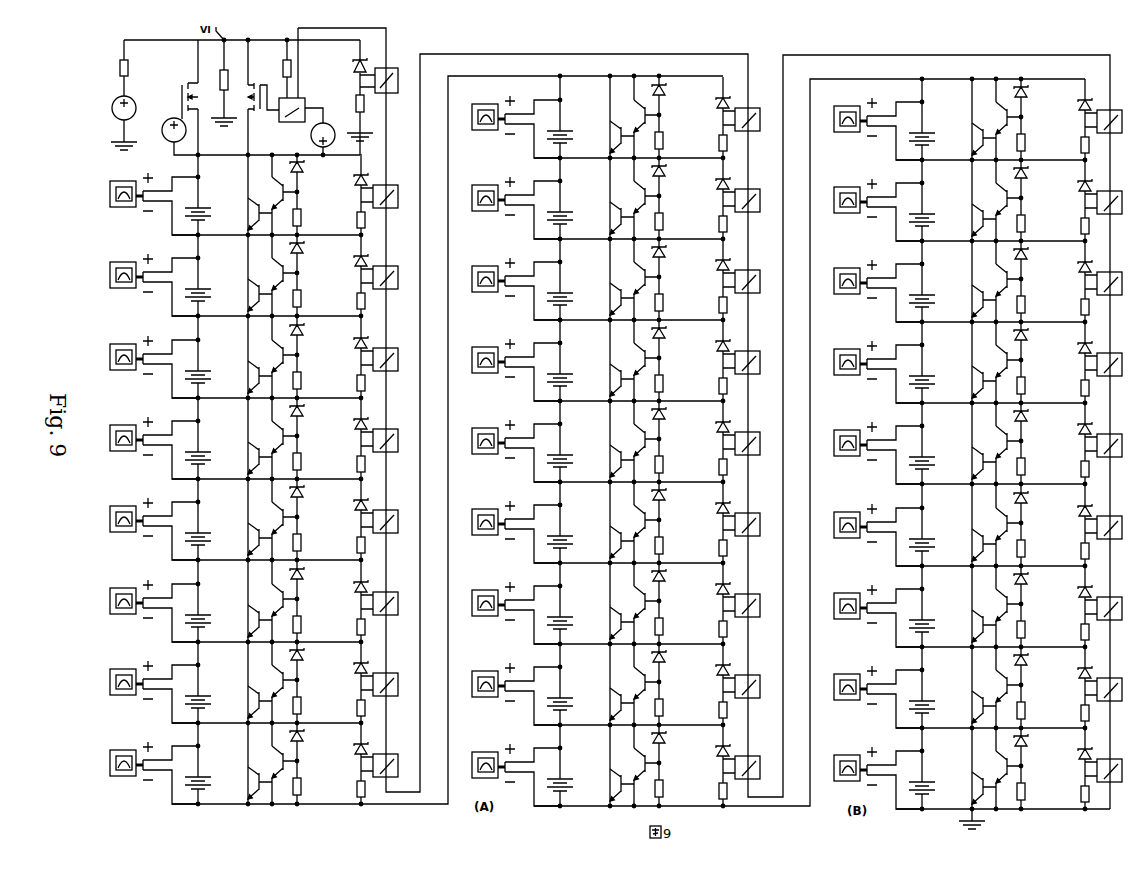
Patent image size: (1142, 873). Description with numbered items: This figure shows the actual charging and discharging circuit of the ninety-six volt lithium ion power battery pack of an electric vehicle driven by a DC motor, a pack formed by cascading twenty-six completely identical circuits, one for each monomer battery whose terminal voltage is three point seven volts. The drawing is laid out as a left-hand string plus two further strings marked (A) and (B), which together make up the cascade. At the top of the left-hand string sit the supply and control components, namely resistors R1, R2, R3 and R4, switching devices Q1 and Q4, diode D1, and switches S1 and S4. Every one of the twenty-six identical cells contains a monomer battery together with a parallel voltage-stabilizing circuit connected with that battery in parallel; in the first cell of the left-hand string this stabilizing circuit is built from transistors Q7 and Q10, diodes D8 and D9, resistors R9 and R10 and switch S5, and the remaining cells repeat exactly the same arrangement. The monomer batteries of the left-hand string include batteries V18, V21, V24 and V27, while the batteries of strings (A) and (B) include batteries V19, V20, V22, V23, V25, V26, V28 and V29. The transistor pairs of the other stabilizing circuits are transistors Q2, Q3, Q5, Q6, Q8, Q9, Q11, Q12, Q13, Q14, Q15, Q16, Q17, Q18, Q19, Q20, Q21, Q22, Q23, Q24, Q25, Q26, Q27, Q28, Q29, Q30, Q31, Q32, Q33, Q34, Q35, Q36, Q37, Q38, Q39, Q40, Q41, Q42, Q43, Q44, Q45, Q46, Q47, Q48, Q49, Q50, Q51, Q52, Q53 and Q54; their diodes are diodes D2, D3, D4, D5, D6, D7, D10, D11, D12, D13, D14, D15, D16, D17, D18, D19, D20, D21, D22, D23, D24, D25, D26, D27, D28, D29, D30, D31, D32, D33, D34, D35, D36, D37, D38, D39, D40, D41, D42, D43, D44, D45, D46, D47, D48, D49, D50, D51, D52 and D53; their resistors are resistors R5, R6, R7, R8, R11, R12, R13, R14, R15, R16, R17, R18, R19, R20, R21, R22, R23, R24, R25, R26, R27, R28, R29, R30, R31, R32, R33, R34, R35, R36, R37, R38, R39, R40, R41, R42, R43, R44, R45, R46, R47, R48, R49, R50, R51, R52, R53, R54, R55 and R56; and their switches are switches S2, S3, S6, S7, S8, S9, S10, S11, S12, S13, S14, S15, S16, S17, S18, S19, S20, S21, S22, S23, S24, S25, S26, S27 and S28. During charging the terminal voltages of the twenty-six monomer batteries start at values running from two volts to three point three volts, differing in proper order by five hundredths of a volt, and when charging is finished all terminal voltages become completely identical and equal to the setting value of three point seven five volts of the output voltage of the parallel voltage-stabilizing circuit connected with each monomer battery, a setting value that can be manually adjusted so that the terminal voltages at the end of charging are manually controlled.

The resistor R1 is at (135, 62).
The resistor R2 is at (295, 62).
The resistor R3 is at (233, 73).
The resistor R4 is at (354, 98).
The MOSFET Q1 is at (182, 101).
The MOSFET Q4 is at (263, 94).
The zener diode D1 is at (360, 72).
The switch S1 is at (390, 74).
The switch S4 is at (286, 110).
The transistor Q7 is at (278, 193).
The transistor Q10 is at (252, 214).
The zener diode D8 is at (295, 171).
The resistor R9 is at (288, 217).
The zener diode D9 is at (361, 187).
The resistor R10 is at (354, 212).
The switch S5 is at (388, 190).
The battery V18 is at (210, 530).
The battery V21 is at (210, 612).
The battery V24 is at (210, 693).
The battery V27 is at (210, 774).
The battery V19 is at (572, 533).
The battery V20 is at (934, 536).
The battery V22 is at (572, 614).
The battery V23 is at (934, 617).
The battery V25 is at (572, 695).
The battery V26 is at (934, 698).
The battery V28 is at (572, 776).
The battery V29 is at (934, 779).
The transistor Q2 is at (640, 116).
The transistor Q3 is at (1002, 118).
The transistor Q5 is at (614, 137).
The transistor Q6 is at (976, 139).
The transistor Q8 is at (640, 197).
The transistor Q9 is at (1002, 199).
The transistor Q11 is at (614, 218).
The transistor Q12 is at (976, 220).
The transistor Q13 is at (278, 274).
The transistor Q14 is at (640, 278).
The transistor Q15 is at (1002, 280).
The transistor Q16 is at (252, 295).
The transistor Q17 is at (614, 299).
The transistor Q18 is at (976, 301).
The transistor Q19 is at (278, 356).
The transistor Q20 is at (640, 359).
The transistor Q21 is at (1002, 361).
The transistor Q22 is at (252, 377).
The transistor Q23 is at (614, 380).
The transistor Q24 is at (976, 382).
The transistor Q25 is at (278, 437).
The transistor Q26 is at (640, 440).
The transistor Q27 is at (1002, 442).
The transistor Q28 is at (252, 458).
The transistor Q29 is at (614, 461).
The transistor Q30 is at (976, 463).
The transistor Q31 is at (278, 518).
The transistor Q32 is at (640, 521).
The transistor Q33 is at (1002, 524).
The transistor Q34 is at (252, 539).
The transistor Q35 is at (614, 542).
The transistor Q36 is at (976, 545).
The transistor Q37 is at (278, 600).
The transistor Q38 is at (640, 602).
The transistor Q39 is at (1002, 605).
The transistor Q40 is at (252, 621).
The transistor Q41 is at (614, 623).
The transistor Q42 is at (976, 626).
The transistor Q43 is at (278, 681).
The transistor Q44 is at (640, 683).
The transistor Q45 is at (1002, 686).
The transistor Q46 is at (252, 702).
The transistor Q47 is at (614, 704).
The transistor Q48 is at (976, 707).
The transistor Q49 is at (278, 762).
The transistor Q50 is at (640, 764).
The transistor Q51 is at (1002, 767).
The transistor Q52 is at (252, 783).
The transistor Q53 is at (614, 785).
The transistor Q54 is at (976, 788).
The zener diode D2 is at (657, 94).
The zener diode D3 is at (1019, 96).
The zener diode D4 is at (723, 110).
The zener diode D5 is at (1085, 112).
The zener diode D6 is at (1019, 177).
The zener diode D7 is at (657, 175).
The zener diode D10 is at (723, 191).
The zener diode D11 is at (1085, 193).
The zener diode D12 is at (297, 252).
The zener diode D13 is at (659, 256).
The zener diode D14 is at (1021, 258).
The zener diode D15 is at (361, 268).
The zener diode D16 is at (723, 272).
The zener diode D17 is at (1085, 274).
The zener diode D18 is at (297, 334).
The zener diode D19 is at (659, 337).
The zener diode D20 is at (1021, 339).
The zener diode D21 is at (361, 350).
The zener diode D22 is at (723, 353).
The zener diode D23 is at (1085, 355).
The zener diode D24 is at (297, 415).
The zener diode D25 is at (659, 418).
The zener diode D26 is at (1021, 420).
The zener diode D27 is at (361, 431).
The zener diode D28 is at (723, 434).
The zener diode D29 is at (1085, 436).
The zener diode D30 is at (297, 496).
The zener diode D31 is at (659, 499).
The zener diode D32 is at (1021, 502).
The zener diode D33 is at (361, 512).
The zener diode D34 is at (723, 515).
The zener diode D35 is at (1085, 518).
The zener diode D36 is at (297, 578).
The zener diode D37 is at (659, 580).
The zener diode D38 is at (1021, 583).
The zener diode D39 is at (361, 594).
The zener diode D40 is at (723, 596).
The zener diode D41 is at (1085, 599).
The zener diode D42 is at (297, 659).
The zener diode D43 is at (659, 661).
The zener diode D44 is at (1021, 664).
The zener diode D45 is at (361, 675).
The zener diode D46 is at (723, 677).
The zener diode D47 is at (1085, 680).
The zener diode D48 is at (297, 740).
The zener diode D49 is at (659, 742).
The zener diode D50 is at (1021, 745).
The zener diode D51 is at (361, 756).
The zener diode D52 is at (723, 758).
The zener diode D53 is at (1085, 761).
The resistor R5 is at (650, 140).
The resistor R6 is at (716, 135).
The resistor R7 is at (1012, 142).
The resistor R8 is at (1078, 137).
The resistor R11 is at (650, 221).
The resistor R12 is at (716, 216).
The resistor R13 is at (1012, 223).
The resistor R14 is at (1078, 218).
The resistor R15 is at (288, 298).
The resistor R16 is at (354, 293).
The resistor R17 is at (650, 302).
The resistor R18 is at (716, 297).
The resistor R19 is at (1012, 304).
The resistor R20 is at (1078, 299).
The resistor R21 is at (288, 380).
The resistor R22 is at (354, 375).
The resistor R23 is at (650, 383).
The resistor R24 is at (716, 378).
The resistor R25 is at (1012, 385).
The resistor R26 is at (1078, 380).
The resistor R27 is at (288, 461).
The resistor R28 is at (354, 456).
The resistor R29 is at (650, 464).
The resistor R30 is at (716, 459).
The resistor R31 is at (1012, 466).
The resistor R32 is at (1078, 461).
The resistor R33 is at (288, 542).
The resistor R34 is at (354, 537).
The resistor R35 is at (650, 545).
The resistor R36 is at (716, 540).
The resistor R37 is at (1012, 548).
The resistor R38 is at (1078, 543).
The resistor R39 is at (288, 624).
The resistor R40 is at (354, 619).
The resistor R41 is at (650, 626).
The resistor R42 is at (716, 621).
The resistor R43 is at (1012, 629).
The resistor R44 is at (1078, 624).
The resistor R45 is at (288, 705).
The resistor R46 is at (354, 700).
The resistor R47 is at (650, 707).
The resistor R48 is at (716, 702).
The resistor R49 is at (1012, 710).
The resistor R50 is at (1078, 705).
The resistor R51 is at (288, 786).
The resistor R52 is at (354, 781).
The resistor R53 is at (650, 788).
The resistor R54 is at (716, 783).
The resistor R55 is at (1012, 791).
The resistor R56 is at (1078, 786).
The switch S2 is at (750, 113).
The switch S3 is at (1112, 115).
The switch S6 is at (750, 194).
The switch S7 is at (1112, 196).
The switch S8 is at (388, 271).
The switch S9 is at (750, 275).
The switch S10 is at (1115, 277).
The switch S11 is at (391, 353).
The switch S12 is at (753, 356).
The switch S13 is at (1115, 358).
The switch S14 is at (391, 434).
The switch S15 is at (753, 437).
The switch S16 is at (1115, 439).
The switch S17 is at (391, 515).
The switch S18 is at (753, 518).
The switch S19 is at (1115, 521).
The switch S20 is at (391, 597).
The switch S21 is at (753, 599).
The switch S22 is at (1115, 602).
The switch S23 is at (391, 678).
The switch S24 is at (753, 680).
The switch S25 is at (1115, 683).
The switch S26 is at (391, 759).
The switch S27 is at (753, 761).
The switch S28 is at (1115, 764).